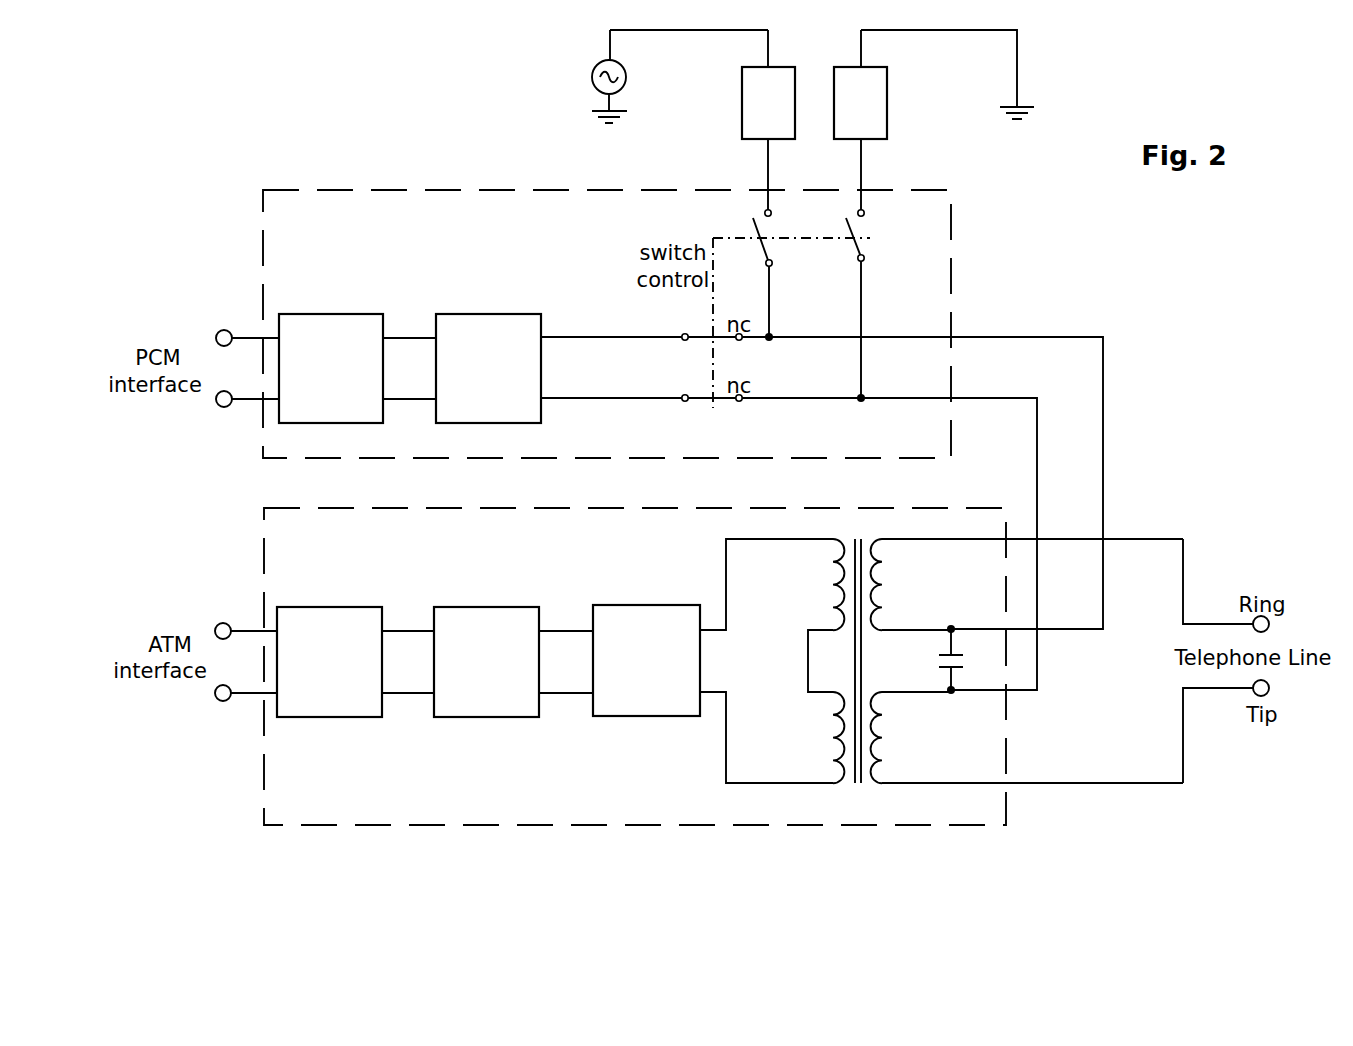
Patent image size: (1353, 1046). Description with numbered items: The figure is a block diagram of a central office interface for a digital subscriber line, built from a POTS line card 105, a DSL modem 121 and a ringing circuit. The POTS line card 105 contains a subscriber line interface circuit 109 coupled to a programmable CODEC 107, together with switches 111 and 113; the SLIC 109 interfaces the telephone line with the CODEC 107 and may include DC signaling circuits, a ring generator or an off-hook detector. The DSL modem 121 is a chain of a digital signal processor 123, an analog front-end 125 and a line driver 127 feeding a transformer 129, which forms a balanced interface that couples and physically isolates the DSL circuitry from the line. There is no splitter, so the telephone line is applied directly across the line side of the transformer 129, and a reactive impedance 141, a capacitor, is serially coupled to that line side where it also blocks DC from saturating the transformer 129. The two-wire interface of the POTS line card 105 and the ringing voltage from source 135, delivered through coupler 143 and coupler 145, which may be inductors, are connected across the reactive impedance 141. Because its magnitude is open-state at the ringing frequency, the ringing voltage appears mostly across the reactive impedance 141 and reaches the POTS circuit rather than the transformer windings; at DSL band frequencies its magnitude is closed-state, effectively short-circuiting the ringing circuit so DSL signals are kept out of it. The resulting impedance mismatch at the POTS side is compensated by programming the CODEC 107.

The POTS line card 105 is at (575, 284).
The programmable CODEC 107 is at (331, 368).
The subscriber line interface circuit 109 is at (488, 368).
The switch 111 is at (782, 240).
The switch 113 is at (875, 270).
The DSL modem 121 is at (602, 695).
The digital signal processor 123 is at (329, 662).
The analog front-end 125 is at (486, 662).
The line driver 127 is at (646, 660).
The transformer 129 is at (941, 646).
The source 135 is at (652, 76).
The reactive impedance 141 is at (930, 659).
The coupler 143 is at (768, 84).
The coupler 145 is at (934, 84).